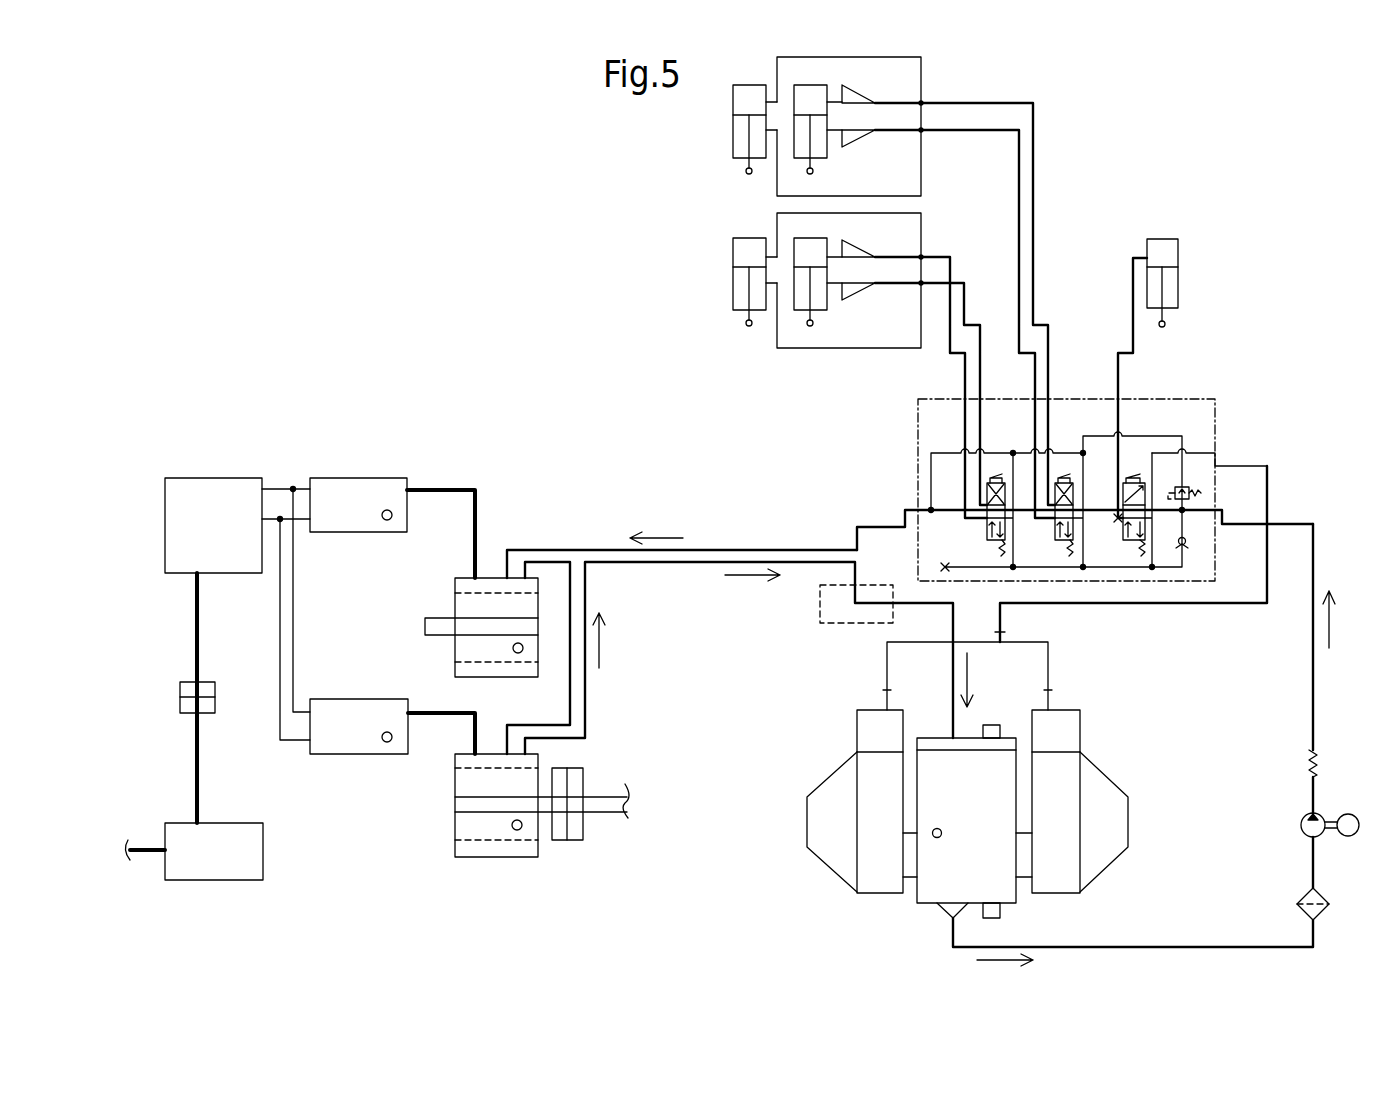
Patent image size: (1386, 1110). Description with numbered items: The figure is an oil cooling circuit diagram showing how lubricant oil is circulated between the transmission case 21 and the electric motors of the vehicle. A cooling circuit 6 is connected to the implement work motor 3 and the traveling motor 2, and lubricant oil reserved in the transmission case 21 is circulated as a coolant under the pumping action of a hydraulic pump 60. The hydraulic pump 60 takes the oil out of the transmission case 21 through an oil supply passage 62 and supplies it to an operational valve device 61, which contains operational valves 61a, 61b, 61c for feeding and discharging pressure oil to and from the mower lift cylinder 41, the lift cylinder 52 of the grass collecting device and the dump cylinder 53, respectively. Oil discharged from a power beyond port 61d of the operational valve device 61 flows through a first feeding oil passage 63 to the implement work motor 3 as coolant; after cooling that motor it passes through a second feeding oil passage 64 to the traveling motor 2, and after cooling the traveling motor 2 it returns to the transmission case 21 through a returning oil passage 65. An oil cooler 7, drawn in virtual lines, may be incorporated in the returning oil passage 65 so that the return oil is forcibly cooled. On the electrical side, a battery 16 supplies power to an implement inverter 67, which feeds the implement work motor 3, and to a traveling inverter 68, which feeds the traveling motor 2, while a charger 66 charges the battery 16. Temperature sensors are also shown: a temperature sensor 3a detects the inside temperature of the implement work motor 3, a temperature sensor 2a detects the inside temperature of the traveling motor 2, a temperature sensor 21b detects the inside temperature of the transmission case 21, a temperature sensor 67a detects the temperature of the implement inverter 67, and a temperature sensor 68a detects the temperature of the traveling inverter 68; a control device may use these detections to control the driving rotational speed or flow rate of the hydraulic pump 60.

The traveling motor 2 is at (453, 818).
The temperature sensor 2a is at (517, 831).
The implement work motor 3 is at (455, 603).
The temperature sensor 3a is at (513, 648).
The cooling circuit 6 is at (679, 508).
The oil cooler 7 is at (815, 603).
The battery 16 is at (213, 477).
The transmission case 21 is at (1005, 892).
The temperature sensor 21b is at (942, 833).
The mower lift cylinder 41 is at (1178, 290).
The lift cylinder 52 is at (733, 275).
The dump cylinder 53 is at (733, 135).
The hydraulic pump 60 is at (1301, 826).
The operational valve device 61 is at (1115, 463).
The operational valve 61a is at (1127, 540).
The operational valve 61b is at (1056, 540).
The operational valve 61c is at (987, 540).
The power beyond port 61d is at (902, 513).
The oil supply passage 62 is at (1315, 678).
The first feeding oil passage 63 is at (733, 549).
The second feeding oil passage 64 is at (568, 653).
The returning oil passage 65 is at (685, 563).
The charger 66 is at (264, 850).
The implement inverter 67 is at (364, 477).
The temperature sensor 67a is at (385, 520).
The traveling inverter 68 is at (328, 756).
The temperature sensor 68a is at (391, 742).